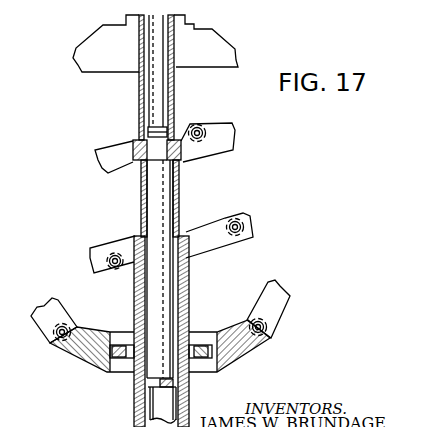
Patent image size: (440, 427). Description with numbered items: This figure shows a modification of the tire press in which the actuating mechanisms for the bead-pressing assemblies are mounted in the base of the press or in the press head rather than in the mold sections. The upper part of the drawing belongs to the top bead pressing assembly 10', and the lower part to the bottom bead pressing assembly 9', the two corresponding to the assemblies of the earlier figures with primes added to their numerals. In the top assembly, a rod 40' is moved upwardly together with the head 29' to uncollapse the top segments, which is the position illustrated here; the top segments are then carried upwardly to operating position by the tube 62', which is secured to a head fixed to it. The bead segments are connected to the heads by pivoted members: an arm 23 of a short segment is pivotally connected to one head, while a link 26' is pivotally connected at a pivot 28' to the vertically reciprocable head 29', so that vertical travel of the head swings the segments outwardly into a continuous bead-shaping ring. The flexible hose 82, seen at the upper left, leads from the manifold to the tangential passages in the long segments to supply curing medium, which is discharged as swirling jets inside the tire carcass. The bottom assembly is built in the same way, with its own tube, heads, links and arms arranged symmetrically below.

The flexible hose 82 is at (22, 0).
The arm 23 is at (200, 32).
The tube 62' is at (128, 77).
The head 29' is at (129, 145).
The link 26' is at (232, 136).
The pivot connection 28' is at (210, 110).
The top bead pressing assembly 10' is at (228, 165).
The rod 40' is at (134, 269).
The bottom bead pressing assembly 9' is at (198, 205).